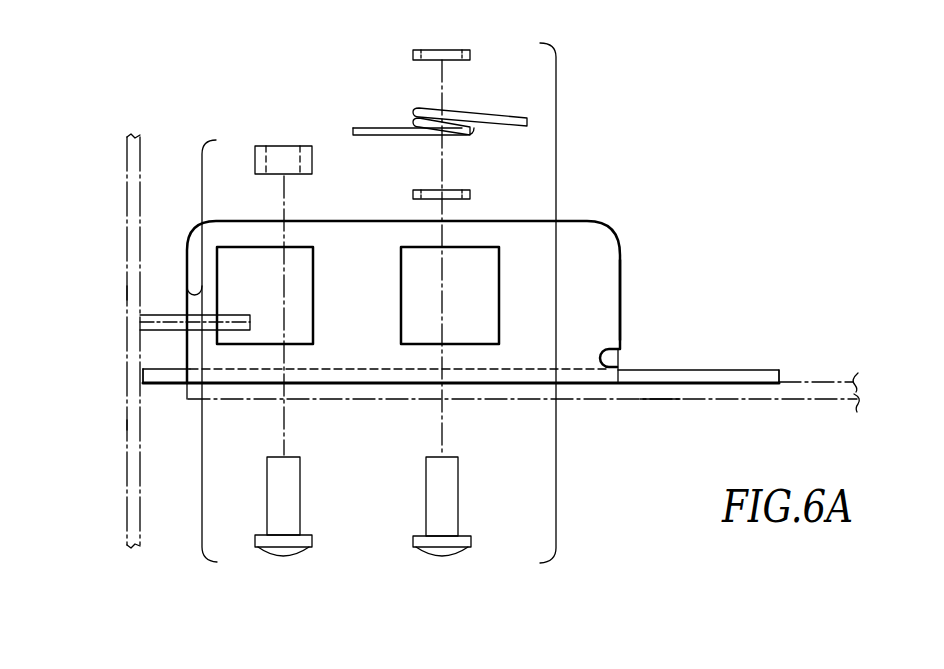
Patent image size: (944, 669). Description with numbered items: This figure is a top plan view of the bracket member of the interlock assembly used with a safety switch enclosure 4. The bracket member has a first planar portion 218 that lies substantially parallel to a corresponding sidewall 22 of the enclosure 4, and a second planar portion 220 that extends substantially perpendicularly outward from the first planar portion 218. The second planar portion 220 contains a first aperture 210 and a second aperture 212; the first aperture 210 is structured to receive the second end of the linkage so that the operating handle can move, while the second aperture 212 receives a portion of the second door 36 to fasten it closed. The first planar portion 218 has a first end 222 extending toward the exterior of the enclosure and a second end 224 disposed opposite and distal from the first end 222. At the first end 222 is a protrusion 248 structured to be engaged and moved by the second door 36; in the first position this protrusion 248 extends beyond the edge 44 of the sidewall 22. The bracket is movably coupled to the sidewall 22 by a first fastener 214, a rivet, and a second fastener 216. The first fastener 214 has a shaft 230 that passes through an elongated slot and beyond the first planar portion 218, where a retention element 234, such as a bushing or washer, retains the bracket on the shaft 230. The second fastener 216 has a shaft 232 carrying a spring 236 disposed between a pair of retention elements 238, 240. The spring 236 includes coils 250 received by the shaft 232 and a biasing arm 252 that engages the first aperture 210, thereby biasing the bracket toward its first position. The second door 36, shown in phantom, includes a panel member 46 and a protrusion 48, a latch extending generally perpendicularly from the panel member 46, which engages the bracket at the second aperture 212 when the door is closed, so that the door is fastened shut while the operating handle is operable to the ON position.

The enclosure 4 is at (661, 416).
The sidewall 22 is at (617, 400).
The second door 36 is at (112, 182).
The edge 44 is at (188, 393).
The panel member 46 is at (127, 293).
The protrusion 48 is at (236, 312).
The first aperture 210 is at (525, 266).
The second aperture 212 is at (313, 258).
The first fastener 214 is at (202, 296).
The second fastener 216 is at (556, 292).
The first planar portion 218 is at (660, 369).
The second planar portion 220 is at (376, 319).
The first end 222 is at (129, 409).
The second end 224 is at (784, 353).
The shaft 230 is at (290, 497).
The shaft 232 is at (448, 497).
The retention element 234 is at (258, 150).
The spring 236 is at (424, 117).
The retention element 238 is at (463, 190).
The retention element 240 is at (420, 51).
The protrusion 248 is at (145, 372).
The coils 250 is at (472, 130).
The biasing arm 252 is at (394, 136).